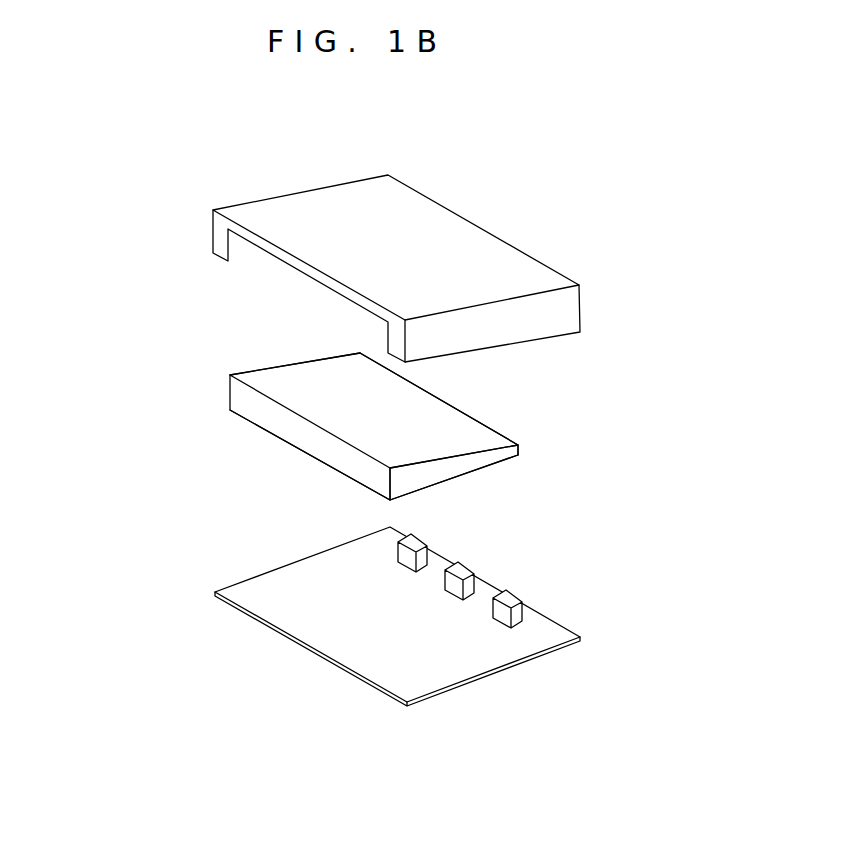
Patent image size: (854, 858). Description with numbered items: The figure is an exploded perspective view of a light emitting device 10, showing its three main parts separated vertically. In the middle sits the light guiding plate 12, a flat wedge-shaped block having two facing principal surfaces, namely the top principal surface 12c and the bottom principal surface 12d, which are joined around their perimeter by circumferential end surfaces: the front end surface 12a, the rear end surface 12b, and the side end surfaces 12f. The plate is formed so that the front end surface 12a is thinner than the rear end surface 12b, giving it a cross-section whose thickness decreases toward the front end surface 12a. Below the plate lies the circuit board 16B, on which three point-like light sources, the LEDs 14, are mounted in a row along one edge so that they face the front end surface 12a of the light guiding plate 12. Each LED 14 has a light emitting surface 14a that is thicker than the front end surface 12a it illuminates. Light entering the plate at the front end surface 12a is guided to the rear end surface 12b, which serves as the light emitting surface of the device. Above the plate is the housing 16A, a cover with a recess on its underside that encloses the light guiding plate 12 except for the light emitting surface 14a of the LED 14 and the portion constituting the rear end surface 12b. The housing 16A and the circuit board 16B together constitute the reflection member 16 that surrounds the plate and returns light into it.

The light emitting device 10 is at (171, 178).
The light guiding plate 12 is at (483, 389).
The front end surface 12a is at (500, 417).
The rear end surface 12b is at (280, 422).
The top principal surface 12c is at (317, 377).
The bottom principal surface 12d is at (308, 458).
The side end surface 12f is at (267, 367).
The LED 14 is at (427, 543).
The light emitting surface of LED 14a is at (505, 608).
The reflection member 16 is at (444, 459).
The housing 16A is at (480, 228).
The circuit board 16B is at (517, 667).